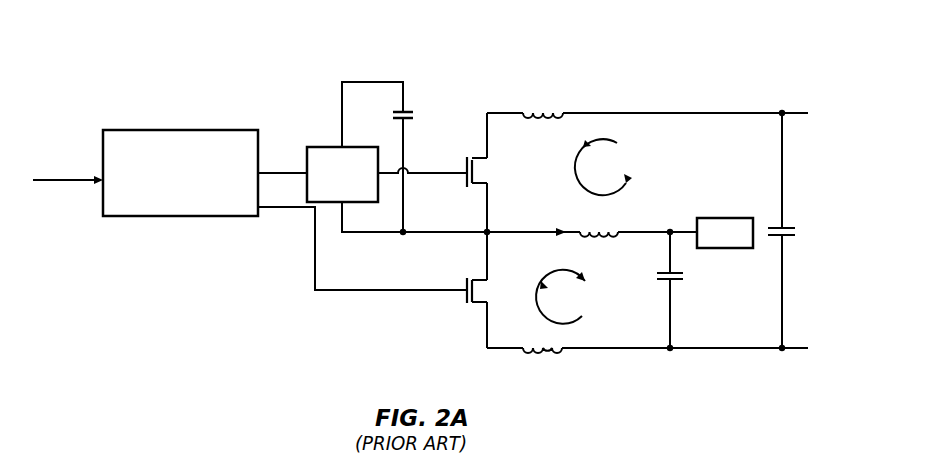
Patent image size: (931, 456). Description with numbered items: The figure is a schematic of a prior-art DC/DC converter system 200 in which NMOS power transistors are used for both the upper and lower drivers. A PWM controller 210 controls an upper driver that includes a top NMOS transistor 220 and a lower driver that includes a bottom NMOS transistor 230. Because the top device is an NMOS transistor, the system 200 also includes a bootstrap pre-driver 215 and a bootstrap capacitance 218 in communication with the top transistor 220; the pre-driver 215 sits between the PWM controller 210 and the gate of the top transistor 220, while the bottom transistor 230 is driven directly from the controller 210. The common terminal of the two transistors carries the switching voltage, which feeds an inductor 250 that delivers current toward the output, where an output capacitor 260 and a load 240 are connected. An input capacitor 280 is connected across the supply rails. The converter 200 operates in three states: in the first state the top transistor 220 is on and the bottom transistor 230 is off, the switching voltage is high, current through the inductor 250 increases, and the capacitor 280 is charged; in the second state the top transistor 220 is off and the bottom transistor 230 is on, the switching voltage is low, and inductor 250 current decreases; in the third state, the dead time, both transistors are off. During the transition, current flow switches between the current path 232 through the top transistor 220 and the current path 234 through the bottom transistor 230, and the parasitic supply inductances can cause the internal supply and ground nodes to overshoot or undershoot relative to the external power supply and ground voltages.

The DC/DC converter system 200 is at (188, 43).
The PWM controller 210 is at (125, 130).
The bootstrap pre-driver 215 is at (331, 147).
The bootstrap capacitance 218 is at (403, 84).
The top NMOS transistor 220 is at (467, 190).
The bottom NMOS transistor 230 is at (467, 306).
The current path 232 is at (576, 161).
The current path 234 is at (546, 276).
The load 240 is at (718, 217).
The inductor 250 is at (587, 238).
The output capacitor 260 is at (683, 282).
The capacitor 280 is at (787, 226).